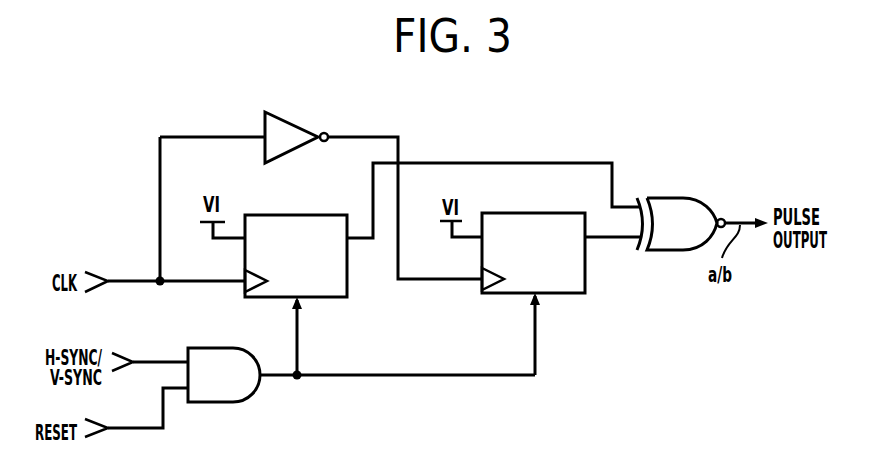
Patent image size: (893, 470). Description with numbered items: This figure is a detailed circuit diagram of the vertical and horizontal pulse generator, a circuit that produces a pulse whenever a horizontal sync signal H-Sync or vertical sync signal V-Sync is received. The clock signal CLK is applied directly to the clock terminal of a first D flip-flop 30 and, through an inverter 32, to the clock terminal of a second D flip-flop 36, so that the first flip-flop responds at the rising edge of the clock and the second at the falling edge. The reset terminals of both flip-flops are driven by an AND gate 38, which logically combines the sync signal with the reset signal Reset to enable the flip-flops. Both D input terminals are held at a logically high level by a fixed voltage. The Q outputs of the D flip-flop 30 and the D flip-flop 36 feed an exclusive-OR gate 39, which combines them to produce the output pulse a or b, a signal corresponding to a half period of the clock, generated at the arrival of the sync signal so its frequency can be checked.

The D flip-flop 30 is at (295, 215).
The inverter 32 is at (290, 121).
The D flip-flop 36 is at (585, 282).
The AND gate 38 is at (228, 402).
The exclusive-OR gate 39 is at (675, 198).